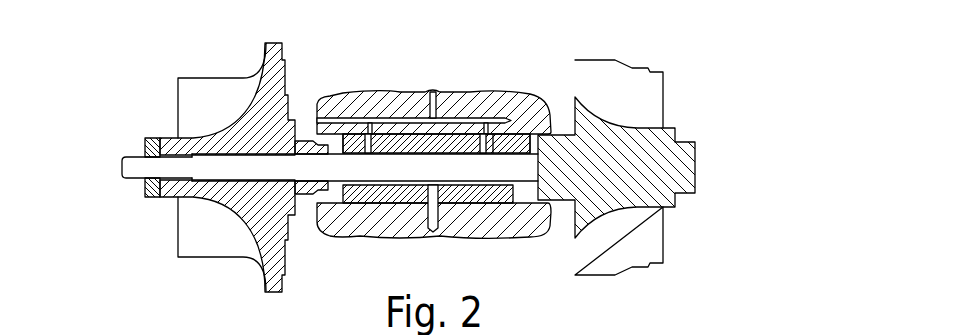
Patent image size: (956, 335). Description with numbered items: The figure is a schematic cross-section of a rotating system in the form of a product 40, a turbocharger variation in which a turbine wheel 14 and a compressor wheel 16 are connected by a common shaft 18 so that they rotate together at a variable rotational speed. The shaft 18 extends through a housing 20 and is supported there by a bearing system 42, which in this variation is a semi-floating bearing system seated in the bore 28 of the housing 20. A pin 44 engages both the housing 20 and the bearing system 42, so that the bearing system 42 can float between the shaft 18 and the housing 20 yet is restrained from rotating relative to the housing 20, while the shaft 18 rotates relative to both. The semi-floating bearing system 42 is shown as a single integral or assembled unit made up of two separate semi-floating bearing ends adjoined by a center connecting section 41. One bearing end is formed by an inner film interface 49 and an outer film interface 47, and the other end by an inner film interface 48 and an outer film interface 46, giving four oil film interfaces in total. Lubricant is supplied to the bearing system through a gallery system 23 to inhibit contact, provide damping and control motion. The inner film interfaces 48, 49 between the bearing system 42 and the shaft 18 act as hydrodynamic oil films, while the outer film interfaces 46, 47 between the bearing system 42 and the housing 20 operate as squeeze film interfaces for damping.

The turbine wheel 14 is at (593, 72).
The compressor wheel 16 is at (248, 75).
The shaft 18 is at (345, 173).
The housing 20 is at (360, 93).
The gallery system 23 is at (420, 117).
The bore 28 is at (315, 140).
The product 40 is at (453, 103).
The center connecting section 41 is at (403, 193).
The bearing system 42 is at (515, 146).
The pin 44 is at (426, 223).
The outer film interface 46 is at (469, 132).
The outer film interface 47 is at (358, 133).
The inner film interface 48 is at (441, 94).
The inner film interface 49 is at (383, 134).